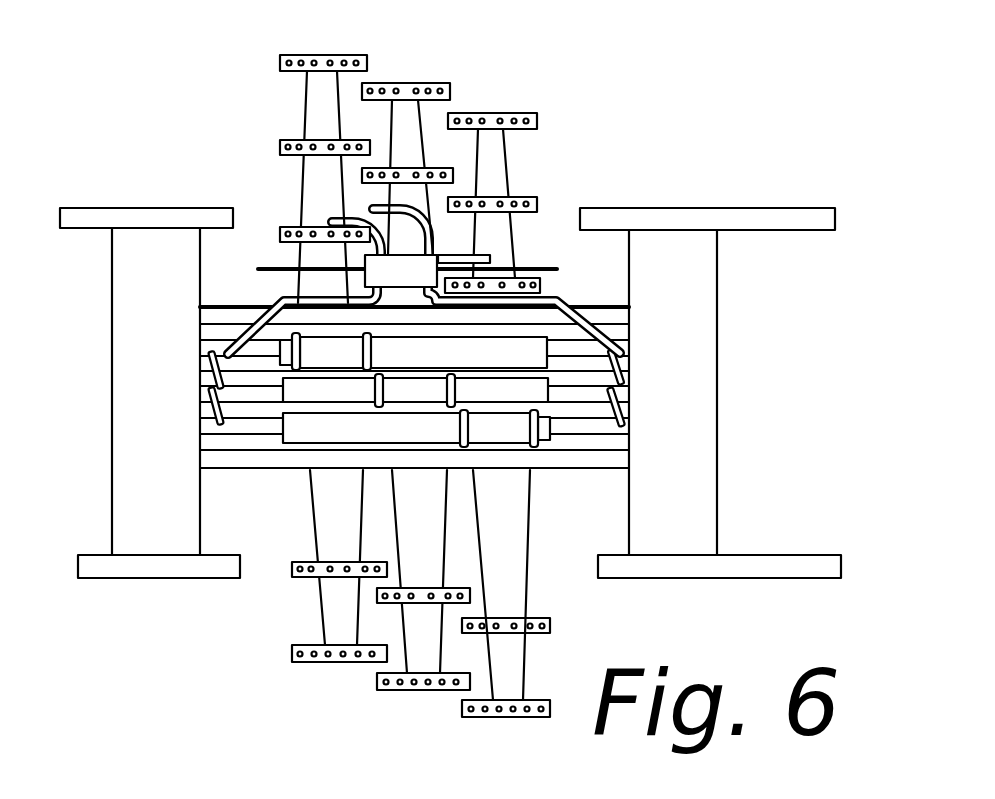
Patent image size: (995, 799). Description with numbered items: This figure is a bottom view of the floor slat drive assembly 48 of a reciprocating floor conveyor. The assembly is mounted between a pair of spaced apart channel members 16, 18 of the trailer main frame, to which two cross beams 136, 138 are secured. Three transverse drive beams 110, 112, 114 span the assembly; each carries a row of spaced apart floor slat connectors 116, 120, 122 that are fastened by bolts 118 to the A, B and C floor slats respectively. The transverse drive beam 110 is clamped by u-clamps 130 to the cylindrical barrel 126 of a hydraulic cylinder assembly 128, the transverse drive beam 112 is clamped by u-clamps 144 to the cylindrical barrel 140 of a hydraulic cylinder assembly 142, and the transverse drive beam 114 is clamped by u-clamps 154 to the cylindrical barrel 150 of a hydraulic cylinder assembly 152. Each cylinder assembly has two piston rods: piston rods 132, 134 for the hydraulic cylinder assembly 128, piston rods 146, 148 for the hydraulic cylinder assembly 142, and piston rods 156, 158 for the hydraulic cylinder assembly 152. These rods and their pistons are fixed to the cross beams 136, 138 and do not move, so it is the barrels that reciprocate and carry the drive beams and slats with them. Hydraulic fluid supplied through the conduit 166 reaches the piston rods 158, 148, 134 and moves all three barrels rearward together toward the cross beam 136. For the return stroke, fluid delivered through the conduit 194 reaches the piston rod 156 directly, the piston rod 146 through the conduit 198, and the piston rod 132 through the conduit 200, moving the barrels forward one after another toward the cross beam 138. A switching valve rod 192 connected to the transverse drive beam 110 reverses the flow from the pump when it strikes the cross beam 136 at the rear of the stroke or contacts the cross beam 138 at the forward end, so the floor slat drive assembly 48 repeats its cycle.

The channel member 16 is at (795, 566).
The channel member 18 is at (777, 219).
The floor slat drive assembly 48 is at (260, 168).
The transverse drive beam 110 is at (517, 577).
The transverse drive beam 112 is at (404, 118).
The transverse drive beam 114 is at (305, 90).
The floor slat connector 116 is at (535, 128).
The bolt 118 is at (343, 55).
The floor slat connector 120 is at (448, 85).
The floor slat connector 122 is at (290, 576).
The cylindrical barrel 126 is at (295, 436).
The hydraulic cylinder assembly 128 is at (267, 436).
The u-clamp 130 is at (467, 440).
The piston rod 132 is at (630, 433).
The piston rod 134 is at (200, 440).
The cross beam 136 is at (705, 496).
The cross beam 138 is at (127, 513).
The cylindrical barrel 140 is at (347, 398).
The hydraulic cylinder assembly 142 is at (260, 402).
The u-clamp 144 is at (448, 394).
The piston rod 146 is at (630, 393).
The piston rod 148 is at (205, 388).
The cylindrical barrel 150 is at (533, 340).
The hydraulic cylinder assembly 152 is at (262, 366).
The u-clamp 154 is at (362, 352).
The piston rod 156 is at (623, 350).
The piston rod 158 is at (207, 352).
The conduit 166 is at (290, 333).
The valve rod 192 is at (277, 262).
The conduit 194 is at (597, 320).
The conduit 198 is at (623, 367).
The conduit 200 is at (630, 407).